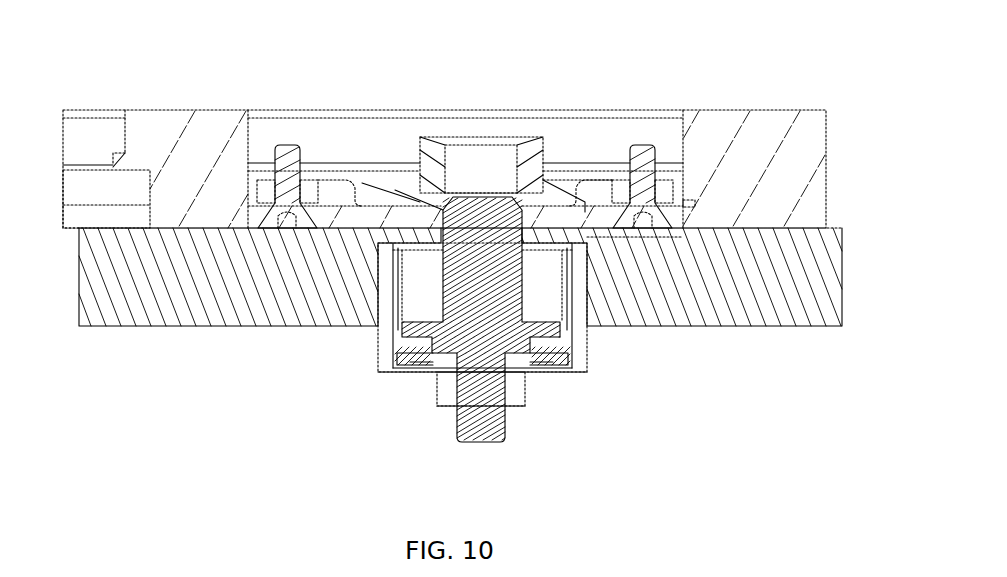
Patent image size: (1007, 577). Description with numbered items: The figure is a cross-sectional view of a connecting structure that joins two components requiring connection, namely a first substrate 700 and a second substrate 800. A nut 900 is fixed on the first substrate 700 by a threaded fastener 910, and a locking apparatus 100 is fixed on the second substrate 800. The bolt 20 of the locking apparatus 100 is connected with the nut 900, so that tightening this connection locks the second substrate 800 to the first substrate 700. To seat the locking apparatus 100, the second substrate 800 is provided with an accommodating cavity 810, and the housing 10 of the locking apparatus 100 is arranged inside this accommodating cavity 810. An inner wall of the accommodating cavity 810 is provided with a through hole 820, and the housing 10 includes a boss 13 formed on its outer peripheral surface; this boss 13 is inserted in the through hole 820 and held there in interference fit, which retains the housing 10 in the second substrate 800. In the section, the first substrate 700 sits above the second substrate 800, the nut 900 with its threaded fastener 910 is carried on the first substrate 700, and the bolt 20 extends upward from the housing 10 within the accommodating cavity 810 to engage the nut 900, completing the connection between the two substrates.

The first substrate 700 is at (165, 120).
The threaded fastener 910 is at (287, 145).
The nut 900 is at (578, 131).
The second substrate 800 is at (113, 327).
The accommodating cavity 810 is at (621, 304).
The through hole 820 is at (399, 257).
The bolt 20 is at (442, 299).
The housing 10 is at (587, 352).
The boss 13 is at (648, 237).
The locking apparatus 100 is at (642, 424).